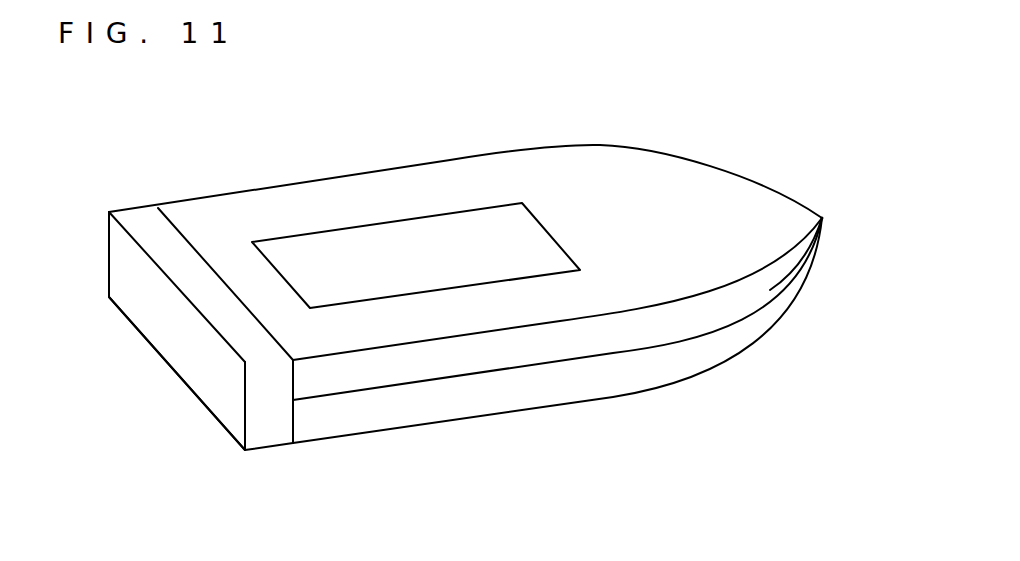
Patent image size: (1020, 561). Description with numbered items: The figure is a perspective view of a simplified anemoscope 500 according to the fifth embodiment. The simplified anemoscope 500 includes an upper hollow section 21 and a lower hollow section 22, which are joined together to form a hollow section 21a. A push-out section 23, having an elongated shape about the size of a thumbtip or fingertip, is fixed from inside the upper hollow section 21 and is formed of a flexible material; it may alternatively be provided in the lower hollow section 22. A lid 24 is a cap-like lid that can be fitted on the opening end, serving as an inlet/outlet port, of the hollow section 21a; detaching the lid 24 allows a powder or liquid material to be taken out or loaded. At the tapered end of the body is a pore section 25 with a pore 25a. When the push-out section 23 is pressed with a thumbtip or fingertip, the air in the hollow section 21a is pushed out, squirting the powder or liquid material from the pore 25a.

The simplified anemoscope 500 is at (480, 511).
The upper hollow section 21 is at (695, 185).
The hollow section 21a is at (670, 290).
The lower hollow section 22 is at (637, 377).
The push-out section 23 is at (412, 242).
The lid 24 is at (162, 326).
The pore section 25 is at (822, 218).
The pore 25a is at (822, 218).